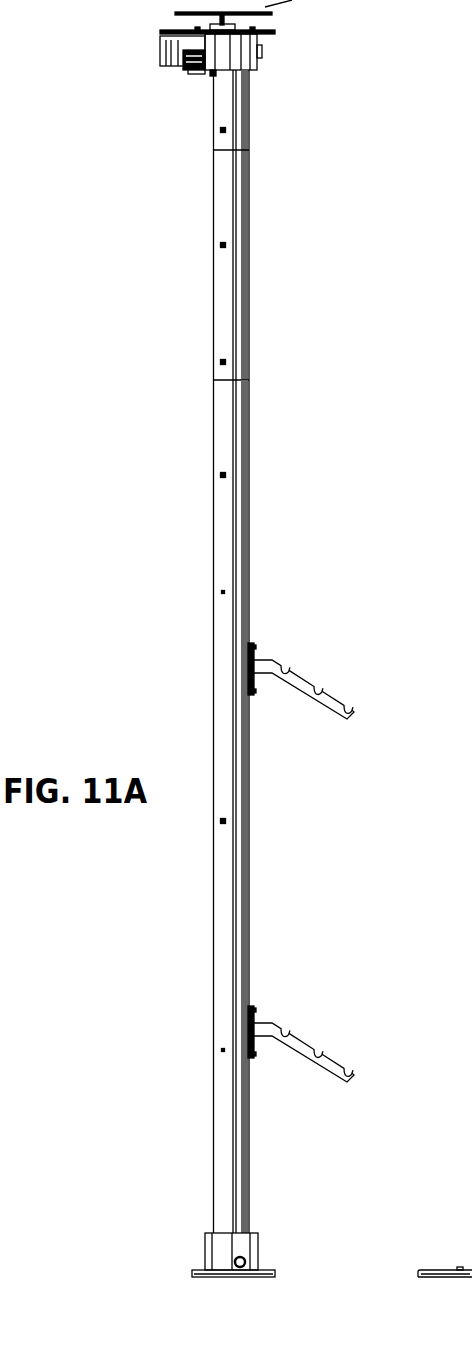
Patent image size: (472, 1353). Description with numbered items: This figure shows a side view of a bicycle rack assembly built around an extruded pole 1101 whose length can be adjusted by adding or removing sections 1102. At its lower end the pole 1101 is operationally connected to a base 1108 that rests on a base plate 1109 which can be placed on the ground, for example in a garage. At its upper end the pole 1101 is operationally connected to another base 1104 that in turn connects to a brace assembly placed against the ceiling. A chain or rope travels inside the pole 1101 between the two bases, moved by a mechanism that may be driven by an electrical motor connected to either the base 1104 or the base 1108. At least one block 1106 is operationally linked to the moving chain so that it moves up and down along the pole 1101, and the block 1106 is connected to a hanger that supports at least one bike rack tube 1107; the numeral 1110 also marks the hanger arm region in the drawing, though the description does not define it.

The pole 1101 is at (342, 651).
The sections 1102 is at (471, 267).
The base 1104 is at (471, 55).
The block 1106 is at (360, 642).
The bike rack tube 1107 is at (471, 722).
The base 1108 is at (471, 1227).
The base plate 1109 is at (463, 1267).
The hook arm 1110 is at (471, 653).